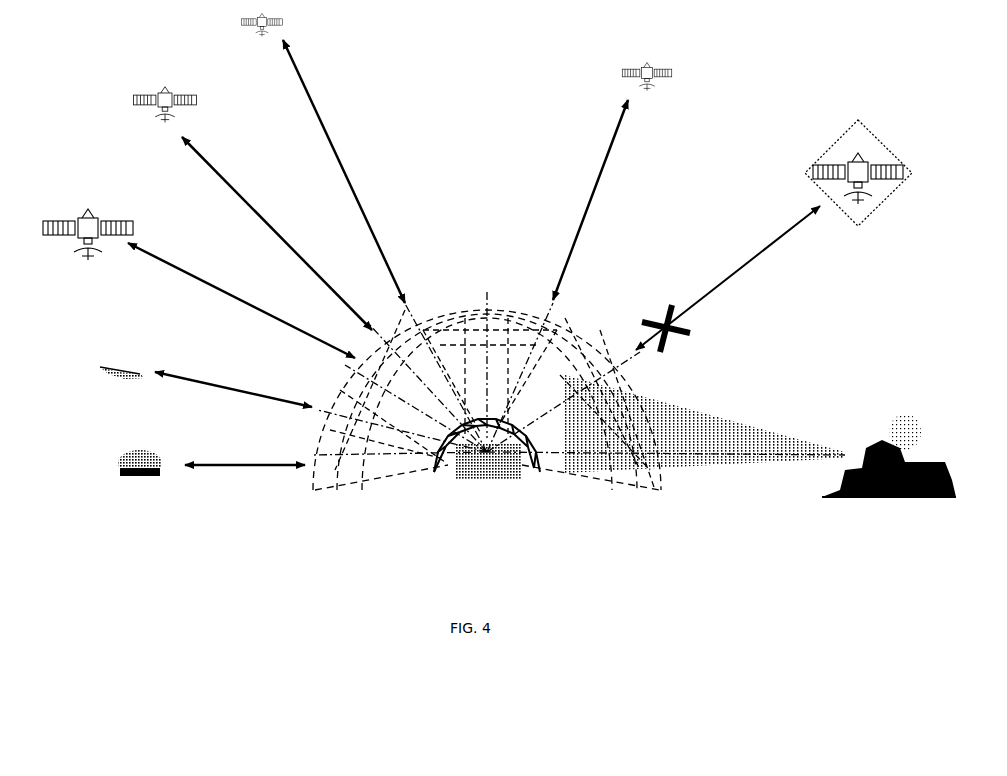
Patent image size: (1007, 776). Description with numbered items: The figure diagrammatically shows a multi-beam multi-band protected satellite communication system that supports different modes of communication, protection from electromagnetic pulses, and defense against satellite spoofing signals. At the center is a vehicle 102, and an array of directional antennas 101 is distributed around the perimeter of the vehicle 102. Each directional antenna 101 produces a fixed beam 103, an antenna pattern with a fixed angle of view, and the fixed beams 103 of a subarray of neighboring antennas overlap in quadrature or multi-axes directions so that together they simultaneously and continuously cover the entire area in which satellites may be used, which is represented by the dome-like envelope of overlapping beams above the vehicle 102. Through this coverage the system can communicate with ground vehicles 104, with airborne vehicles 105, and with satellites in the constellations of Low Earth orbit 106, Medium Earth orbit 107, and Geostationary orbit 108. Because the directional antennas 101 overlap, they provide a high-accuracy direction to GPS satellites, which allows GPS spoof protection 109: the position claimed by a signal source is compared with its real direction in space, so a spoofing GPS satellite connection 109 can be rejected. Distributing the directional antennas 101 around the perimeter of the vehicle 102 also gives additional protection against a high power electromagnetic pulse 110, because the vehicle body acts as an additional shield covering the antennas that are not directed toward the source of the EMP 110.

The directional antenna 101 is at (456, 468).
The vehicle 102 is at (515, 478).
The fixed beam 103 is at (526, 404).
The ground vehicle 104 is at (140, 476).
The airborne vehicle 105 is at (122, 387).
The LEO satellite 106 is at (81, 237).
The MEO satellite 107 is at (163, 120).
The GEO satellite 108 is at (247, 31).
The spoofing GPS satellite connection 109 is at (774, 236).
The EMP 110 is at (705, 424).